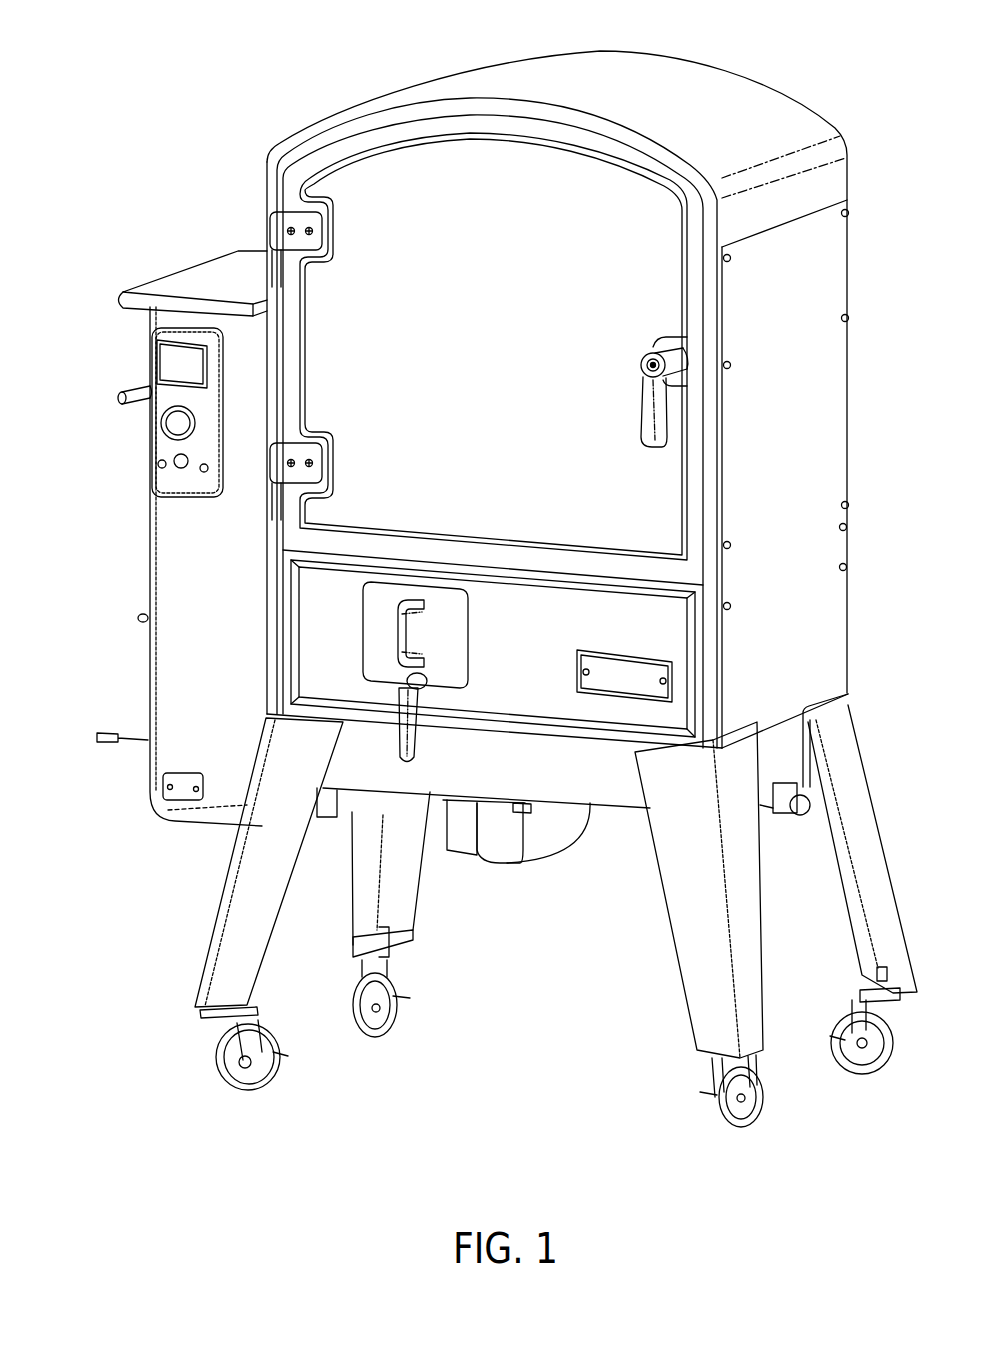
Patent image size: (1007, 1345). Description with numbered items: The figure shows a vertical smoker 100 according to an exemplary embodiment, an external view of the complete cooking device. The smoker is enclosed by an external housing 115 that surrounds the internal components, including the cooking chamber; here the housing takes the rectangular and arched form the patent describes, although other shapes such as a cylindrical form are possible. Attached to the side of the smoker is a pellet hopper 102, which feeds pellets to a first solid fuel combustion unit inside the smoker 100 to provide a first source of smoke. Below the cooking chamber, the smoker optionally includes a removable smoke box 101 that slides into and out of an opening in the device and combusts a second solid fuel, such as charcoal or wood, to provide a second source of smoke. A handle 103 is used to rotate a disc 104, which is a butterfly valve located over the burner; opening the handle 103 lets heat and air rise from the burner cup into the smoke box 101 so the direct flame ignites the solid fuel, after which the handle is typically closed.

The vertical smoker 100 is at (500, 572).
The removable smoke box 101 is at (457, 668).
The pellet hopper 102 is at (190, 573).
The handle 103 is at (396, 750).
The disc 104 is at (657, 432).
The external housing 115 is at (263, 156).